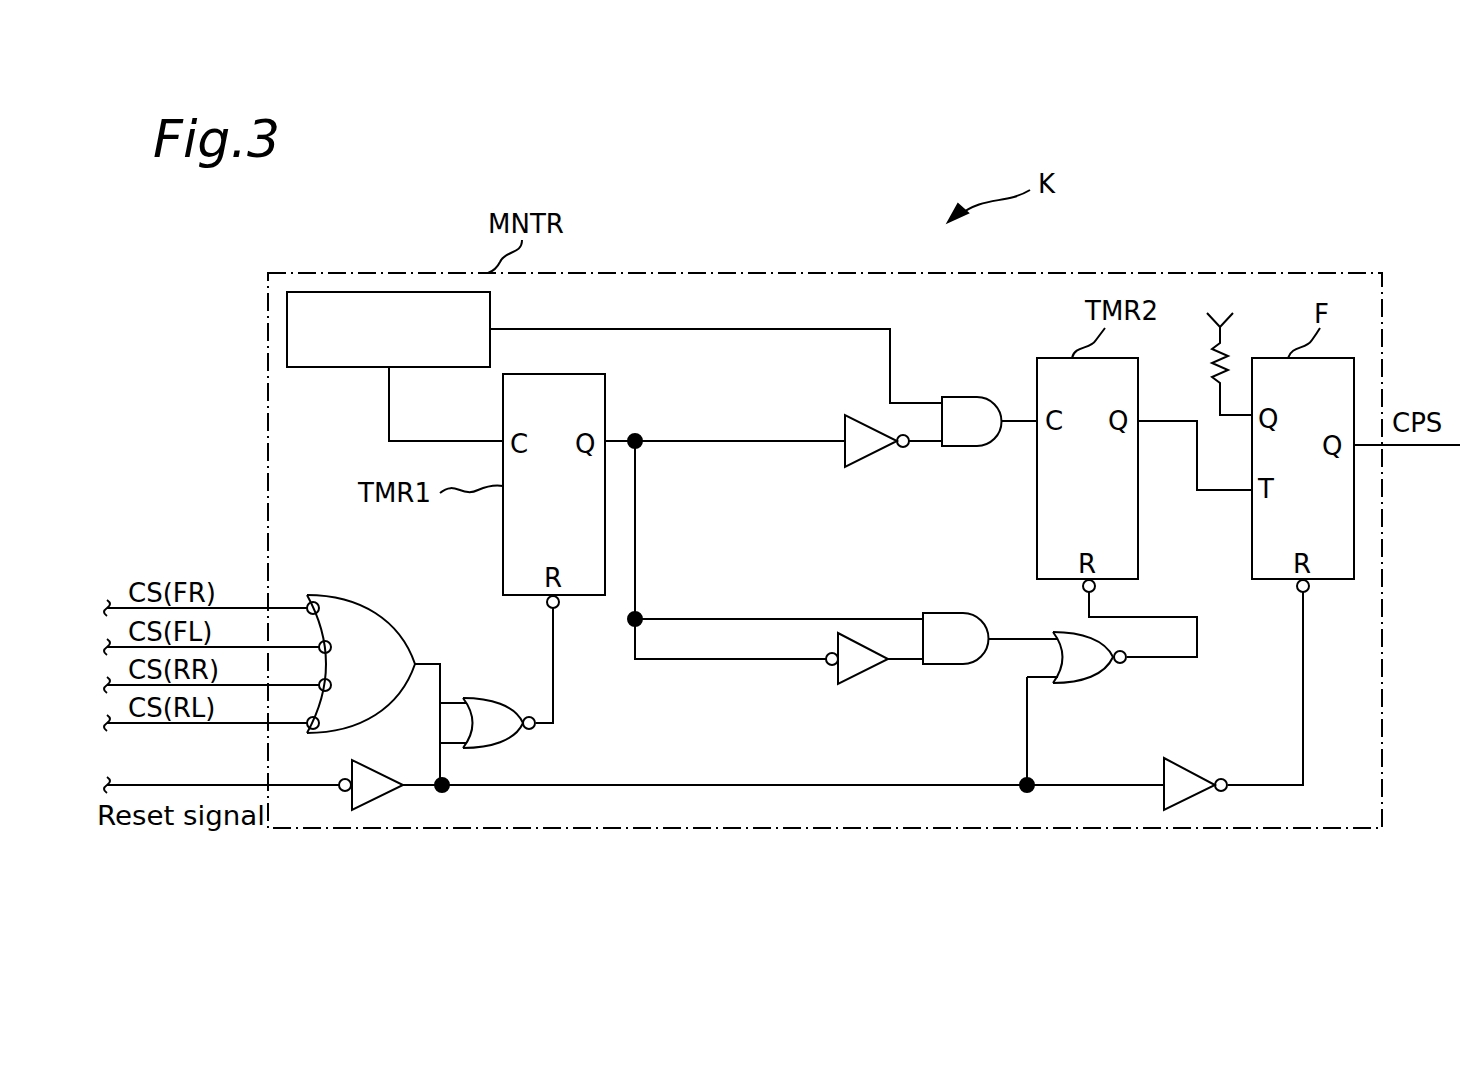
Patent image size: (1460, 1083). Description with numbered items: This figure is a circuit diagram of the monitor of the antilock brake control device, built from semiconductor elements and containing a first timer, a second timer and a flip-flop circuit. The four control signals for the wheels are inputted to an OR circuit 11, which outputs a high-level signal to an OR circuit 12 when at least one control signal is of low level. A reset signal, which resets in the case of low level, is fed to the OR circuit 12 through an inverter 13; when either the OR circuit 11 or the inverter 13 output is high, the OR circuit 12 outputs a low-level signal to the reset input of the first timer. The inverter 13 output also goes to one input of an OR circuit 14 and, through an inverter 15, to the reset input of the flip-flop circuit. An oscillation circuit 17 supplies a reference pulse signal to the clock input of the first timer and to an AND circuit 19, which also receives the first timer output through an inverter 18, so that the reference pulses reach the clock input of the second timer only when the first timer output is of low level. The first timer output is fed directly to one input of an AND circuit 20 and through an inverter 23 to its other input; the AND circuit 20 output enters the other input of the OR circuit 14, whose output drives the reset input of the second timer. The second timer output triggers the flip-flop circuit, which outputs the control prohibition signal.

The OR circuit 11 is at (350, 595).
The OR circuit 12 is at (482, 699).
The inverter 13 is at (380, 772).
The OR circuit 14 is at (1078, 684).
The inverter 15 is at (1180, 763).
The oscillation circuit 17 is at (362, 368).
The inverter 18 is at (865, 462).
The AND circuit 19 is at (965, 397).
The AND circuit 20 is at (945, 613).
The inverter 23 is at (860, 680).